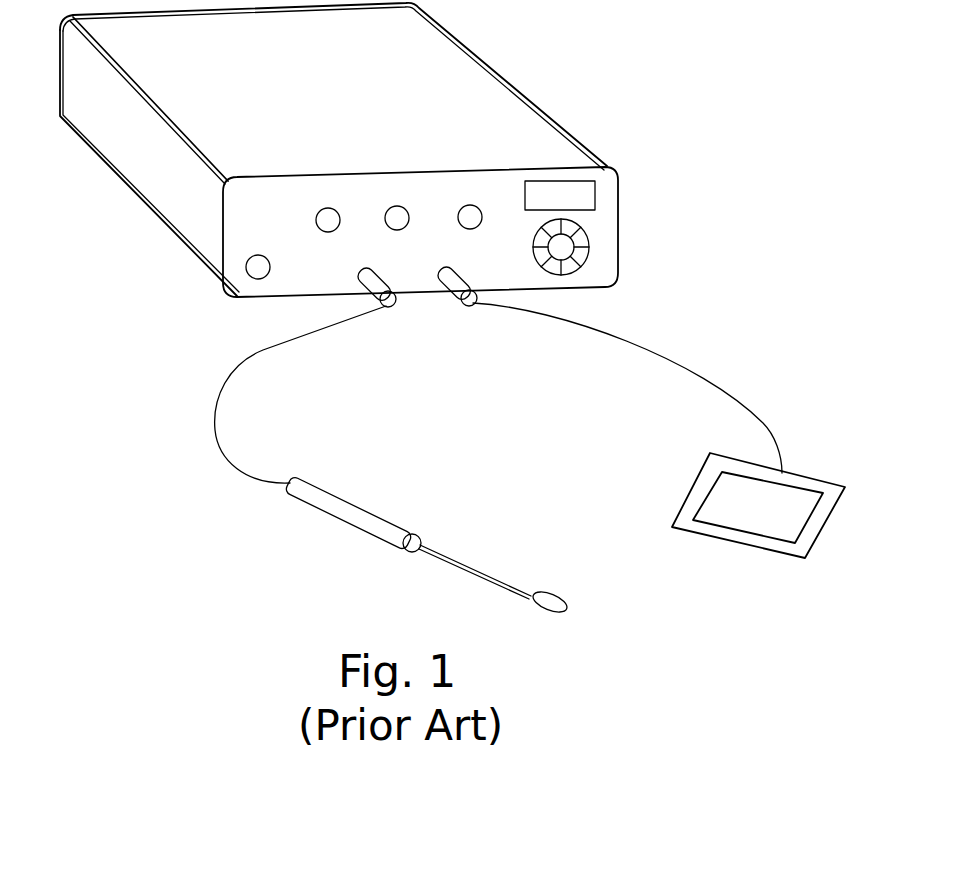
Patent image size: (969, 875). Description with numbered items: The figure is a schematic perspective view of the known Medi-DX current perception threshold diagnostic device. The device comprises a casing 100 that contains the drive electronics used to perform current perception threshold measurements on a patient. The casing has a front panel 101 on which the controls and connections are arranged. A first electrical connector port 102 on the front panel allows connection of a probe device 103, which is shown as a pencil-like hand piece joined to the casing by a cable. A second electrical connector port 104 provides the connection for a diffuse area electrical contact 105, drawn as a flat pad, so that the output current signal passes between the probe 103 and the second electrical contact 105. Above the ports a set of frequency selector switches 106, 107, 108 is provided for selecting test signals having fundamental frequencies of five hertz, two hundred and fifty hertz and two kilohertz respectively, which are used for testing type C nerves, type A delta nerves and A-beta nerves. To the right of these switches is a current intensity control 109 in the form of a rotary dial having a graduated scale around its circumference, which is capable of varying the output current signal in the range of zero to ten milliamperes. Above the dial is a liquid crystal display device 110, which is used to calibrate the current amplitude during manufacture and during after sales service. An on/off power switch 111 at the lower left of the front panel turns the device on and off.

The casing 100 is at (483, 78).
The front panel 101 is at (279, 208).
The first electrical connector port 102 is at (357, 294).
The probe device 103 is at (345, 503).
The second electrical connector port 104 is at (443, 297).
The diffuse area electrical contact 105 is at (836, 490).
The frequency selector switch 106 is at (336, 224).
The frequency selector switch 107 is at (405, 222).
The frequency selector switch 108 is at (478, 221).
The current intensity control 109 is at (565, 247).
The liquid crystal display device 110 is at (596, 192).
The on/off power switch 111 is at (310, 276).